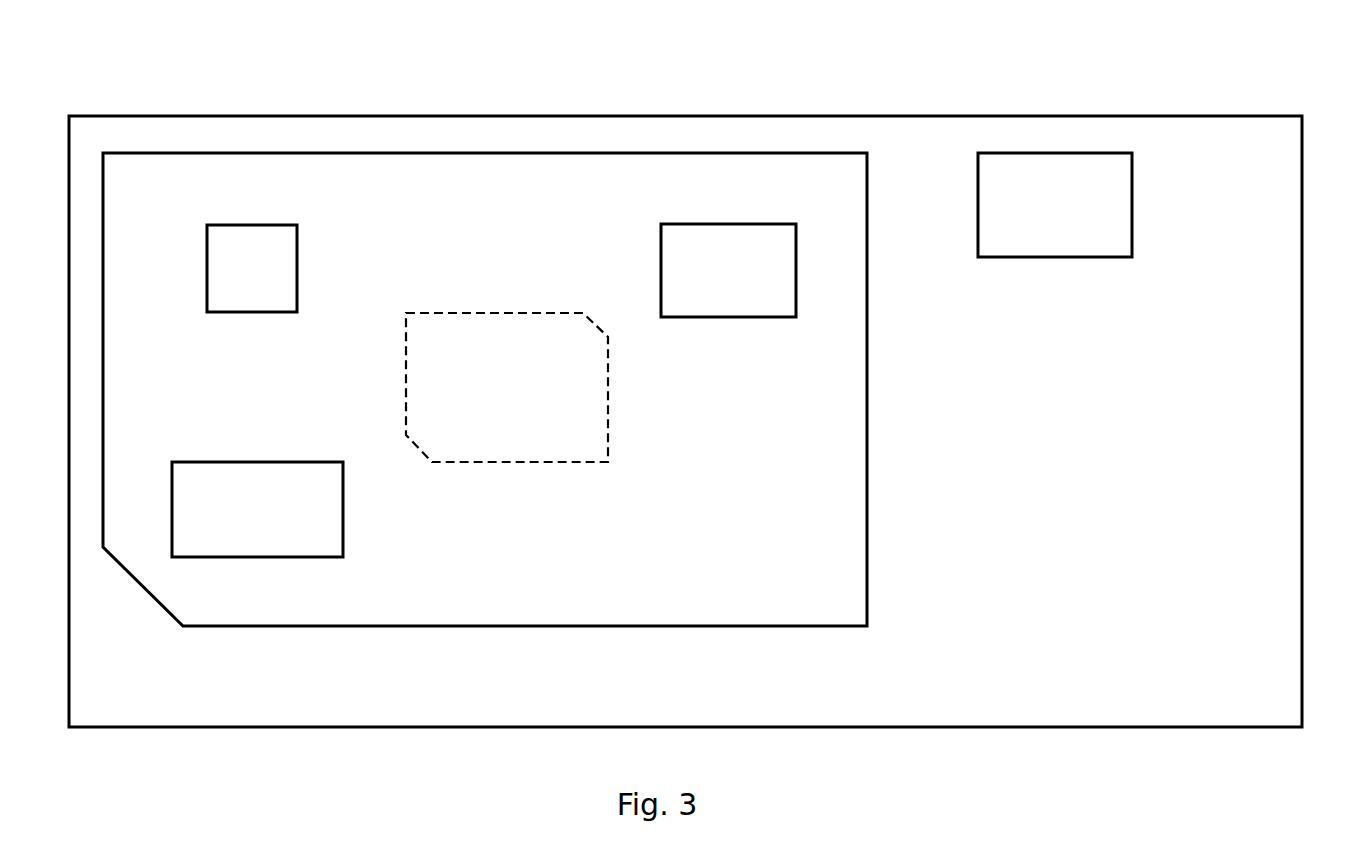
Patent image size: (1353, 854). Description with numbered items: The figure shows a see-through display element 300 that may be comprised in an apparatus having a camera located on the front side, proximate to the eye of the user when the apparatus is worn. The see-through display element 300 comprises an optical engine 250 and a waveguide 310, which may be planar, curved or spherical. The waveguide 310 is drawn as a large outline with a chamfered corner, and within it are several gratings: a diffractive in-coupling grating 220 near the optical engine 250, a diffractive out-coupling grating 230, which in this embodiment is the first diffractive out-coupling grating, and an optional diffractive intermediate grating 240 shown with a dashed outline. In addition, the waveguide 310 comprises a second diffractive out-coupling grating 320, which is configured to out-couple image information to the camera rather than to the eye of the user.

The see-through display element 300 is at (774, 97).
The waveguide 310 is at (867, 598).
The second diffractive out-coupling grating 320 is at (252, 268).
The diffractive in-coupling grating 220 is at (728, 270).
The diffractive out-coupling grating 230 is at (257, 509).
The diffractive intermediate grating 240 is at (507, 387).
The optical engine 250 is at (1055, 205).